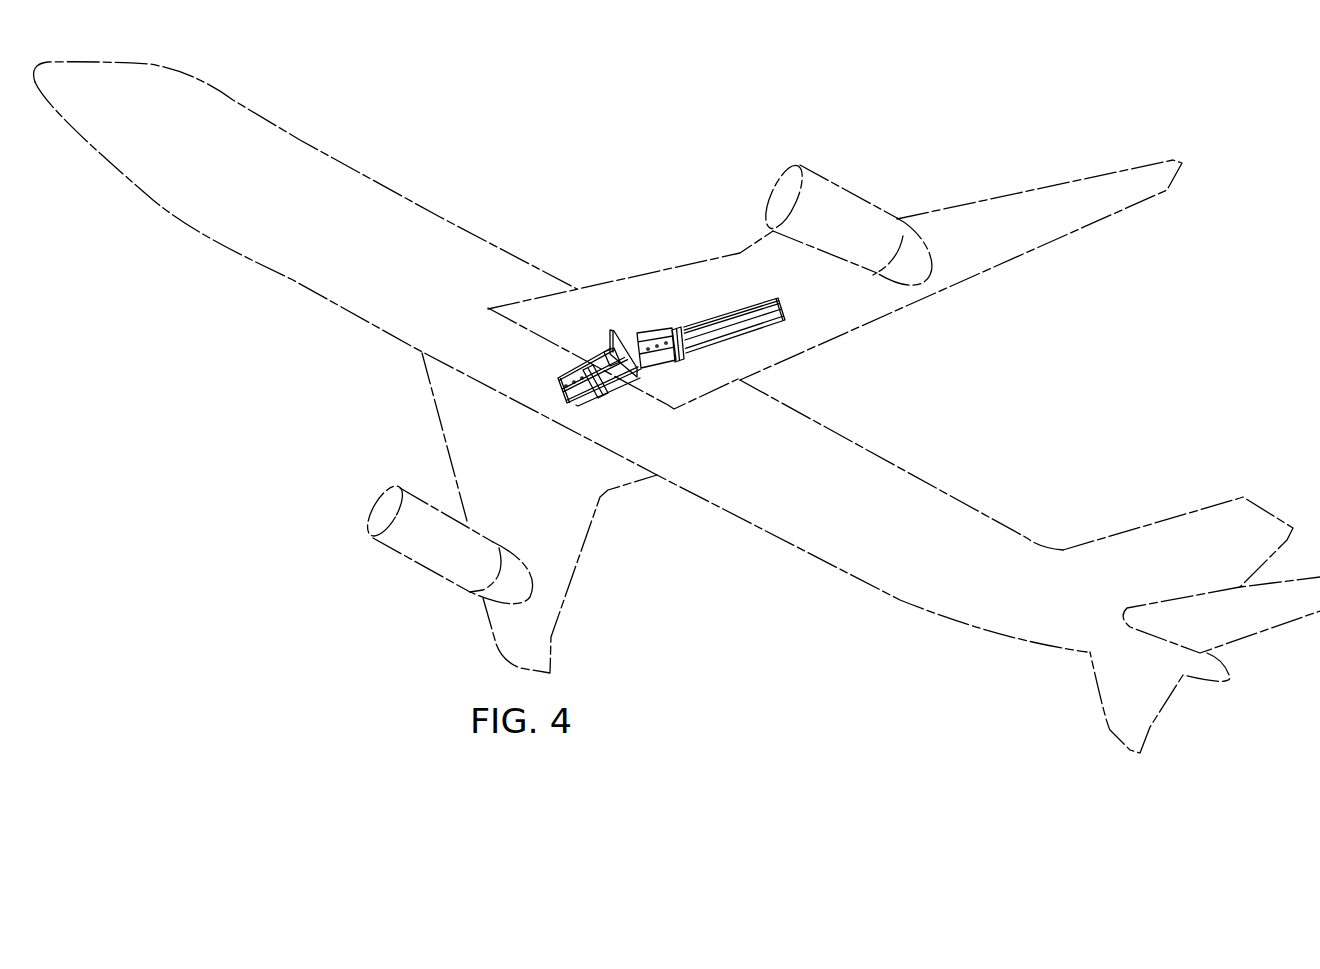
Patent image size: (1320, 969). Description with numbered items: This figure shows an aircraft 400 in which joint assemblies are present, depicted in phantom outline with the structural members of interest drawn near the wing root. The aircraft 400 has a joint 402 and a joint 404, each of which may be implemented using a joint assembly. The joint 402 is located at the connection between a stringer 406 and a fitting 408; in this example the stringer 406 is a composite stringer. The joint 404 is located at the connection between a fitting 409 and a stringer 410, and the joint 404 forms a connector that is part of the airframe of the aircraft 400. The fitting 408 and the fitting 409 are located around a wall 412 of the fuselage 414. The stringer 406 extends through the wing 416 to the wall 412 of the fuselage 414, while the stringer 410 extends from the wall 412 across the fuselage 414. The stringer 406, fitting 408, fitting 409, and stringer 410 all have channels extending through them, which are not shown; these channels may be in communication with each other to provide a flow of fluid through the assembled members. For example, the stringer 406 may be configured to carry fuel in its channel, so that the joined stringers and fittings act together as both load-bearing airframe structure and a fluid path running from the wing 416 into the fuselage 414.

The aircraft 400 is at (288, 277).
The joint 402 is at (696, 355).
The joint 404 is at (598, 398).
The stringer 406 is at (771, 322).
The fitting 408 is at (656, 348).
The fitting 409 is at (607, 358).
The stringer 410 is at (562, 384).
The wall 412 is at (621, 328).
The fuselage 414 is at (490, 244).
The wing 416 is at (683, 262).